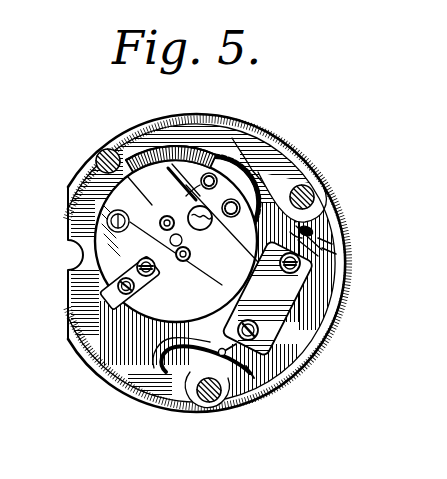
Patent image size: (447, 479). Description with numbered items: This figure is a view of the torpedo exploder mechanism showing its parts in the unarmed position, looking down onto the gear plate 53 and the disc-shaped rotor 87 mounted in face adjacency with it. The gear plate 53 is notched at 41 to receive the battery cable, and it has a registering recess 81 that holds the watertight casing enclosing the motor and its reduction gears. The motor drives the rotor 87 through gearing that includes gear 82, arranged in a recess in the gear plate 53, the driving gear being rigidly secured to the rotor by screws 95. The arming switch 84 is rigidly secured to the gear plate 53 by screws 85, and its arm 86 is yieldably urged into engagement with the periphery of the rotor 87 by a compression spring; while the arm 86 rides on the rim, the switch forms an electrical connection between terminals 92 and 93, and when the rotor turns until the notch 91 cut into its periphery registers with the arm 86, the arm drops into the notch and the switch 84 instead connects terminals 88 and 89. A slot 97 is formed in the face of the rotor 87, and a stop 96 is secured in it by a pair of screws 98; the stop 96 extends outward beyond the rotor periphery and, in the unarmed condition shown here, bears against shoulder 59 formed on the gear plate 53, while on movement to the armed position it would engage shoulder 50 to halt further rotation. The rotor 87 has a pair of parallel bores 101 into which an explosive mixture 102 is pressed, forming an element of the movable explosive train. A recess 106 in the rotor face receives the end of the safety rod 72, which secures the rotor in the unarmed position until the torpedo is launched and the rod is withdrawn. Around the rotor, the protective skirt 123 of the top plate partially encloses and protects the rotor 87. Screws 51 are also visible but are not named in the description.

The notch 41 is at (75, 258).
The shoulder 50 is at (140, 158).
The screws 51 is at (100, 152).
The gear plate 53 is at (333, 325).
The shoulder 59 is at (122, 294).
The safety rod 72 is at (107, 222).
The registering recess 81 is at (240, 150).
The gear 82 is at (254, 176).
The arming switch 84 is at (273, 294).
The screws 85 is at (300, 270).
The arm 86 is at (244, 277).
The rotor 87 is at (188, 322).
The terminal 88 is at (298, 229).
The terminal 89 is at (221, 352).
The notch 91 is at (182, 167).
The terminal 92 is at (338, 247).
The terminal 93 is at (258, 372).
The screws 95 is at (167, 216).
The stop 96 is at (150, 282).
The slot 97 is at (132, 316).
The screws 98 is at (140, 266).
The bores 101 is at (234, 217).
The explosive mixture 102 is at (190, 214).
The recess 106 is at (100, 210).
The protective skirt 123 is at (203, 126).